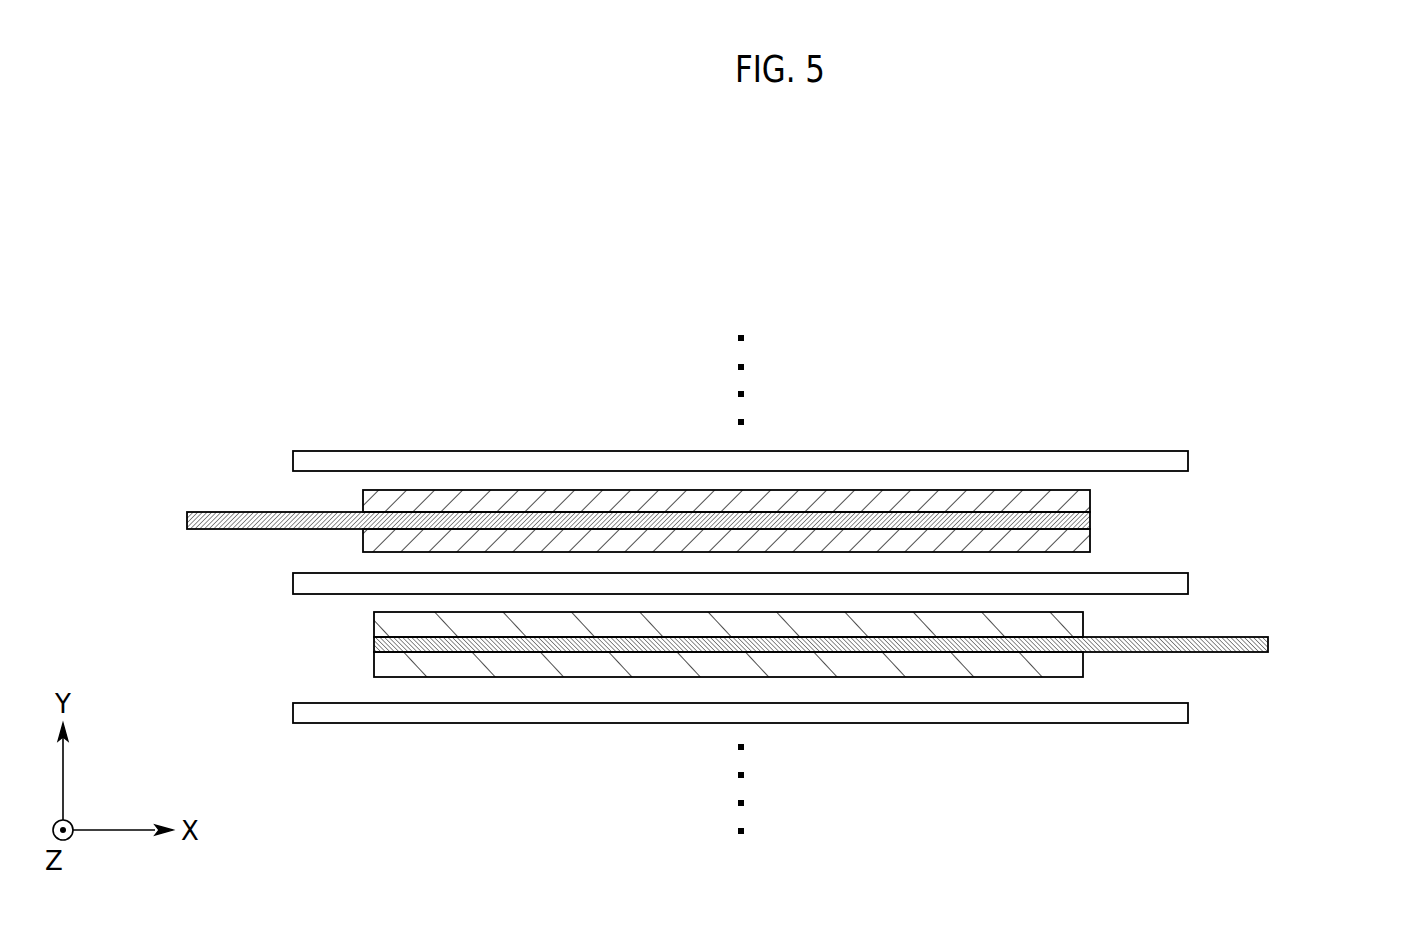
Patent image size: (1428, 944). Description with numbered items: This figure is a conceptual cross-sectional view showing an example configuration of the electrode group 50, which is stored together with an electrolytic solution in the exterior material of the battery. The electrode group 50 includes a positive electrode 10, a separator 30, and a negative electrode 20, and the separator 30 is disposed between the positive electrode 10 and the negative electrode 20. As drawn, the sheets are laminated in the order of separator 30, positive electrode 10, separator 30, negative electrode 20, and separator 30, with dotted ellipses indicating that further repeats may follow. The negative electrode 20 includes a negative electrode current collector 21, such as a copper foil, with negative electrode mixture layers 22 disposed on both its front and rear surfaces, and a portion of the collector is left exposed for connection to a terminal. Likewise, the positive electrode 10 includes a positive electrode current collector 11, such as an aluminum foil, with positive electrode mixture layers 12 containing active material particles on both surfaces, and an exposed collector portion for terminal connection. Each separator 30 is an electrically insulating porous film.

The electrode group 50 is at (341, 351).
The separator 30 is at (293, 462).
The negative electrode 20 is at (789, 519).
The negative electrode mixture layer 22 is at (1090, 500).
The negative electrode current collector 21 is at (1090, 520).
The positive electrode 10 is at (882, 647).
The positive electrode mixture layer 12 is at (1083, 625).
The positive electrode current collector 11 is at (1268, 643).